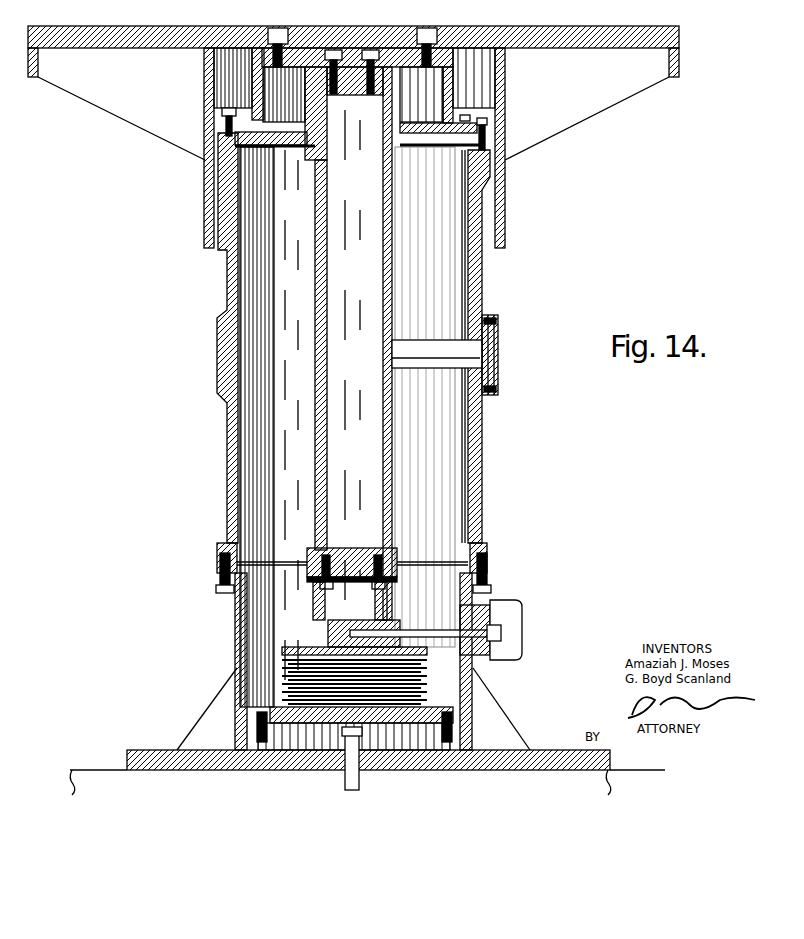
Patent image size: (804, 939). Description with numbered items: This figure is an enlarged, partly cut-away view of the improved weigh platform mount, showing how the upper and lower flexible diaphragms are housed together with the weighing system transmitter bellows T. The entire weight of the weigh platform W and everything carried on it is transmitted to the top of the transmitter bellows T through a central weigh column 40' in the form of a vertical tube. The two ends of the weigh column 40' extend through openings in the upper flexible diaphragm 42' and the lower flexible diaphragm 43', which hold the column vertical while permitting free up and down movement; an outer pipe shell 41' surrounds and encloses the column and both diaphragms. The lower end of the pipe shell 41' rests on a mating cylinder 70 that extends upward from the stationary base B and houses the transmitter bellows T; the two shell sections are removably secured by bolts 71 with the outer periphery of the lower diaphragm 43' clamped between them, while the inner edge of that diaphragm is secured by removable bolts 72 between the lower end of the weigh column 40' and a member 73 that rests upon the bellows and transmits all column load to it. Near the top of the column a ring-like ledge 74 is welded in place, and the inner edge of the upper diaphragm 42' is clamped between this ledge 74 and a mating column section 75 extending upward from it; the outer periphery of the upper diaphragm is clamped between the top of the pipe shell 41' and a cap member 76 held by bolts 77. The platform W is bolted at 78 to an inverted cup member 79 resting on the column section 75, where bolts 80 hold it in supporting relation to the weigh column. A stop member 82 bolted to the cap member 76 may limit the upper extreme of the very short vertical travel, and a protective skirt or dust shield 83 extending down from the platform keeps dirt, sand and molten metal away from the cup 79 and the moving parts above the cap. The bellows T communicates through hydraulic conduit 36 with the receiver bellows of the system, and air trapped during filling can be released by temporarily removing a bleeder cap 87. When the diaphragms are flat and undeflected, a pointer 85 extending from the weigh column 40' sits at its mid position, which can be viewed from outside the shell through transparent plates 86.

The weigh platform W is at (679, 36).
The bolts 78 is at (277, 28).
The inverted cup member 79 is at (252, 95).
The bolts 80 is at (371, 95).
The stop member 82 is at (226, 110).
The protective skirt or dust shield 83 is at (204, 190).
The upper flexible diaphragm 42' is at (309, 387).
The weigh column 40' is at (389, 343).
The outer pipe shell 41' is at (326, 338).
The ring-like ledge 74 is at (405, 150).
The mating column section 75 is at (404, 125).
The cap member 76 is at (472, 120).
The bolts 77 is at (488, 121).
The pointer 85 is at (487, 350).
The transparent plates 86 is at (496, 372).
The lower flexible diaphragm 43' is at (335, 557).
The mating cylinder 70 is at (235, 628).
The bolts 71 is at (216, 589).
The bolts 72 is at (382, 595).
The member 73 is at (312, 598).
The transmitter bellows T is at (427, 652).
The bleeder cap 87 is at (510, 628).
The stationary base B is at (103, 765).
The hydraulic conduit 36 is at (360, 780).